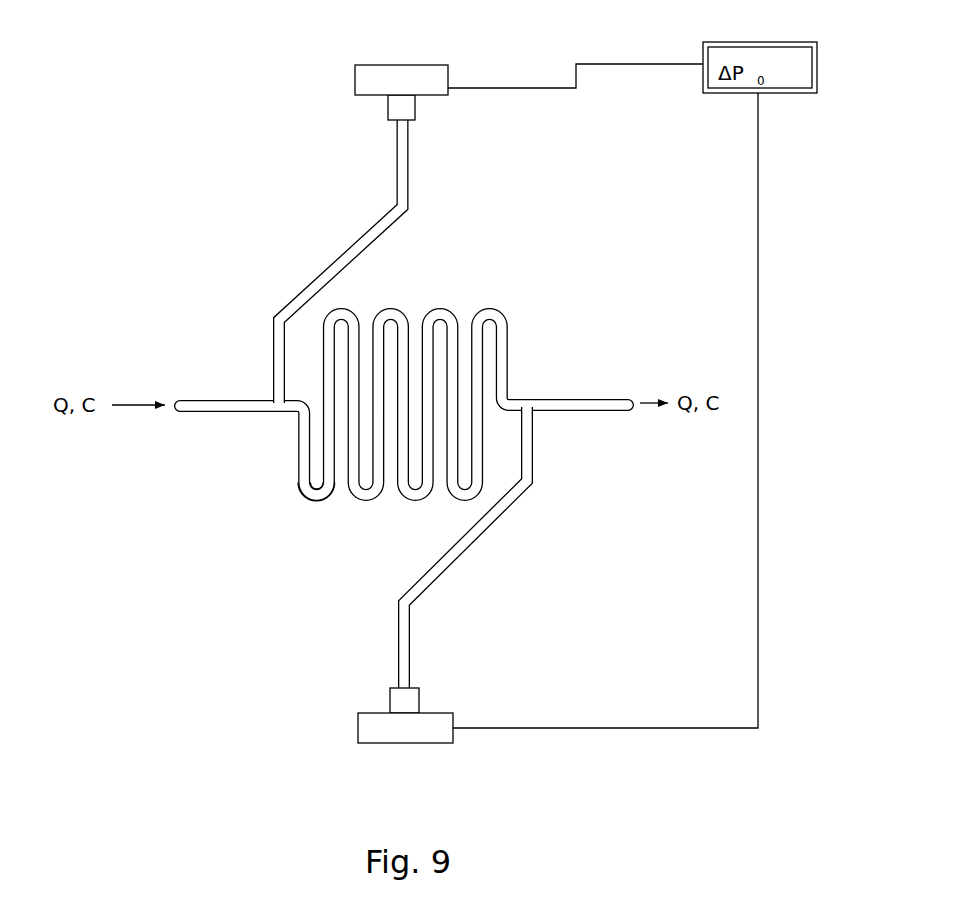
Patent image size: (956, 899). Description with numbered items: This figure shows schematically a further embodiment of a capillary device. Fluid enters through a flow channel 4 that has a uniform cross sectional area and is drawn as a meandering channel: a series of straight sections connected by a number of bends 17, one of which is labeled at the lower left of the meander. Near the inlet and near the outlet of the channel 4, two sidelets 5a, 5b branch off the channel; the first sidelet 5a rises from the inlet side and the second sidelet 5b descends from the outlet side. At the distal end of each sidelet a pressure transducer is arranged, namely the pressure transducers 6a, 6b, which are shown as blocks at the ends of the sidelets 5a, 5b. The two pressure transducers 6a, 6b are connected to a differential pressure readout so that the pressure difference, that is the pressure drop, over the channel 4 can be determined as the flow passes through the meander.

The flow channel 4 is at (430, 293).
The sidelet 5a is at (325, 245).
The sidelet 5b is at (495, 555).
The pressure transducer 6a is at (340, 78).
The pressure transducer 6b is at (345, 724).
The bend 17 is at (317, 512).